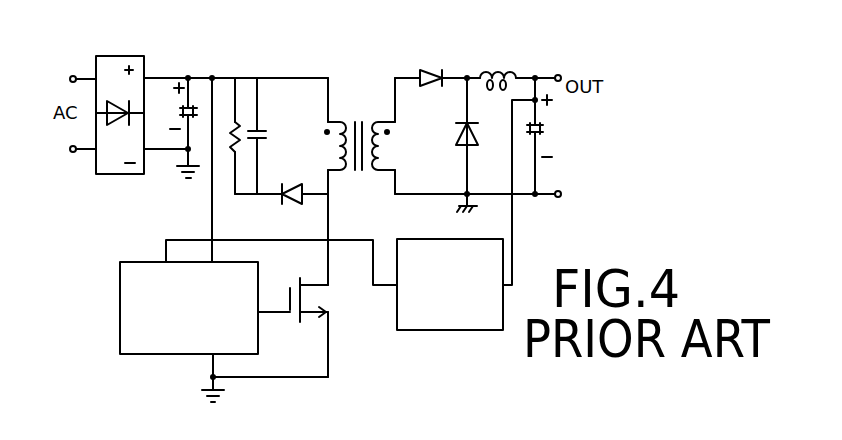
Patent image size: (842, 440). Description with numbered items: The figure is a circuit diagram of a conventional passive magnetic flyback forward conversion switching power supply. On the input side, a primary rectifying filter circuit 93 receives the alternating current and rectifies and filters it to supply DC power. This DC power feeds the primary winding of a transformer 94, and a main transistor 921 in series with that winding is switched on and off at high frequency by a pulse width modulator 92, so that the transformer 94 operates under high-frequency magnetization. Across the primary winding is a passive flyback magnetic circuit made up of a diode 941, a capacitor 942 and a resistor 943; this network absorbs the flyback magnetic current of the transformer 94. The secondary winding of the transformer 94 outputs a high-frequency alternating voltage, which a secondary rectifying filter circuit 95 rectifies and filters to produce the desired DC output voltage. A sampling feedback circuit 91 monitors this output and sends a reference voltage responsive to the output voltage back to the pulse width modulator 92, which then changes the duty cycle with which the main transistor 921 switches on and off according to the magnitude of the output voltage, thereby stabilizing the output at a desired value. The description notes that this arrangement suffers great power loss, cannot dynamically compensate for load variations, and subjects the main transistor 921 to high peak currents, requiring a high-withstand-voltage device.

The sampling feedback circuit 91 is at (478, 323).
The pulse width modulator 92 is at (143, 355).
The main transistor 921 is at (320, 295).
The primary rectifying filter circuit 93 is at (186, 60).
The transformer 94 is at (360, 114).
The diode 941 is at (287, 185).
The capacitor 942 is at (258, 127).
The resistor 943 is at (240, 118).
The secondary rectifying filter circuit 95 is at (498, 57).